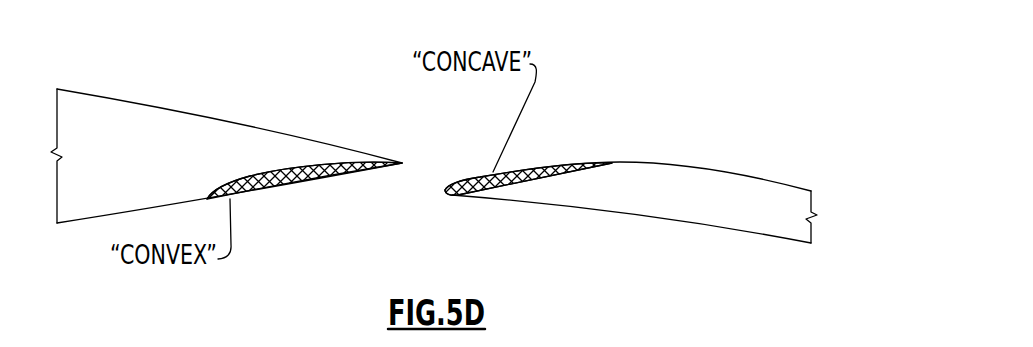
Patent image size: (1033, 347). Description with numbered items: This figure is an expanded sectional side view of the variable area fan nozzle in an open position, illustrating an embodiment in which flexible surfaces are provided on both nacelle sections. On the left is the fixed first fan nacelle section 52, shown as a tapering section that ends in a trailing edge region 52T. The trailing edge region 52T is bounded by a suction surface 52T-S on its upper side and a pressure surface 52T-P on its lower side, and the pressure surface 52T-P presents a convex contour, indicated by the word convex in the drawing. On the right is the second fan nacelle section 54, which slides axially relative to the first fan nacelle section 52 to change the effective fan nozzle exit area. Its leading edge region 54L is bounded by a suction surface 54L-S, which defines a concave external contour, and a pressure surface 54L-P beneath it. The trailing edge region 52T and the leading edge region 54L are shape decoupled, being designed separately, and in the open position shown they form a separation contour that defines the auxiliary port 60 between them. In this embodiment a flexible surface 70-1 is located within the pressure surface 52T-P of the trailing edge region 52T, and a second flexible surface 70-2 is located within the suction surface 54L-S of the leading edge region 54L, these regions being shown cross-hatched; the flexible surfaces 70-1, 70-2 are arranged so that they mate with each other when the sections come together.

The first fan nacelle section 52 is at (242, 156).
The trailing edge region 52T is at (307, 198).
The suction surface 52T-S is at (297, 137).
The pressure surface 52T-P is at (343, 176).
The flexible surface 70-1 is at (233, 183).
The auxiliary port 60 is at (447, 158).
The second fan nacelle section 54 is at (610, 174).
The leading edge region 54L is at (538, 157).
The suction surface 54L-S is at (512, 166).
The pressure surface 54L-P is at (509, 203).
The flexible surface 70-2 is at (465, 197).